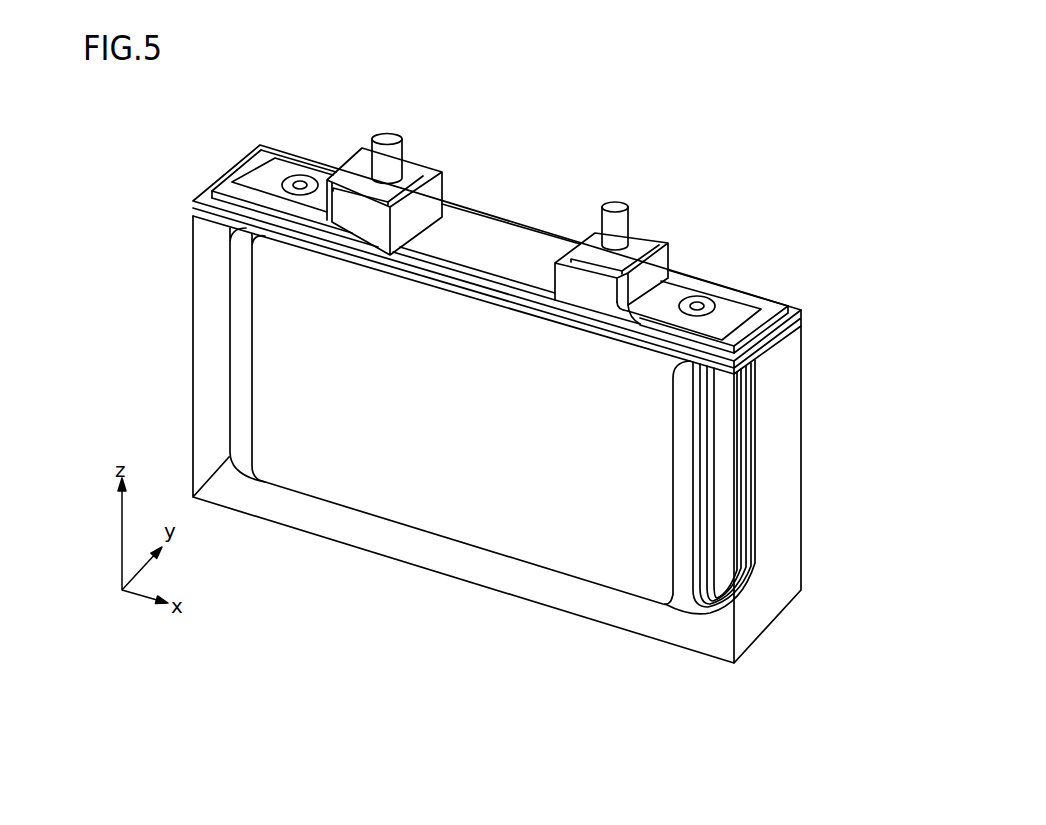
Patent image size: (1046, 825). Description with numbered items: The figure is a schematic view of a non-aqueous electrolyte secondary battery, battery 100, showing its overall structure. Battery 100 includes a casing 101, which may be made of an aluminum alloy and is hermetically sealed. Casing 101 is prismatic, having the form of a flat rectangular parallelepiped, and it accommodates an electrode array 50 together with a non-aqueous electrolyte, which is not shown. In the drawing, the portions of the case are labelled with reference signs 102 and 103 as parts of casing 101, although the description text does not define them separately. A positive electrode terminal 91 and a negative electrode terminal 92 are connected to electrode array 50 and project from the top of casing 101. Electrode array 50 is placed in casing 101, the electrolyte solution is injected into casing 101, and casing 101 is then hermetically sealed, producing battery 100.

The battery 100 is at (556, 117).
The casing 101 is at (868, 268).
The case body 102 is at (805, 357).
The lid 103 is at (805, 307).
The positive electrode terminal 91 is at (615, 207).
The negative electrode terminal 92 is at (386, 137).
The electrode array 50 is at (447, 433).